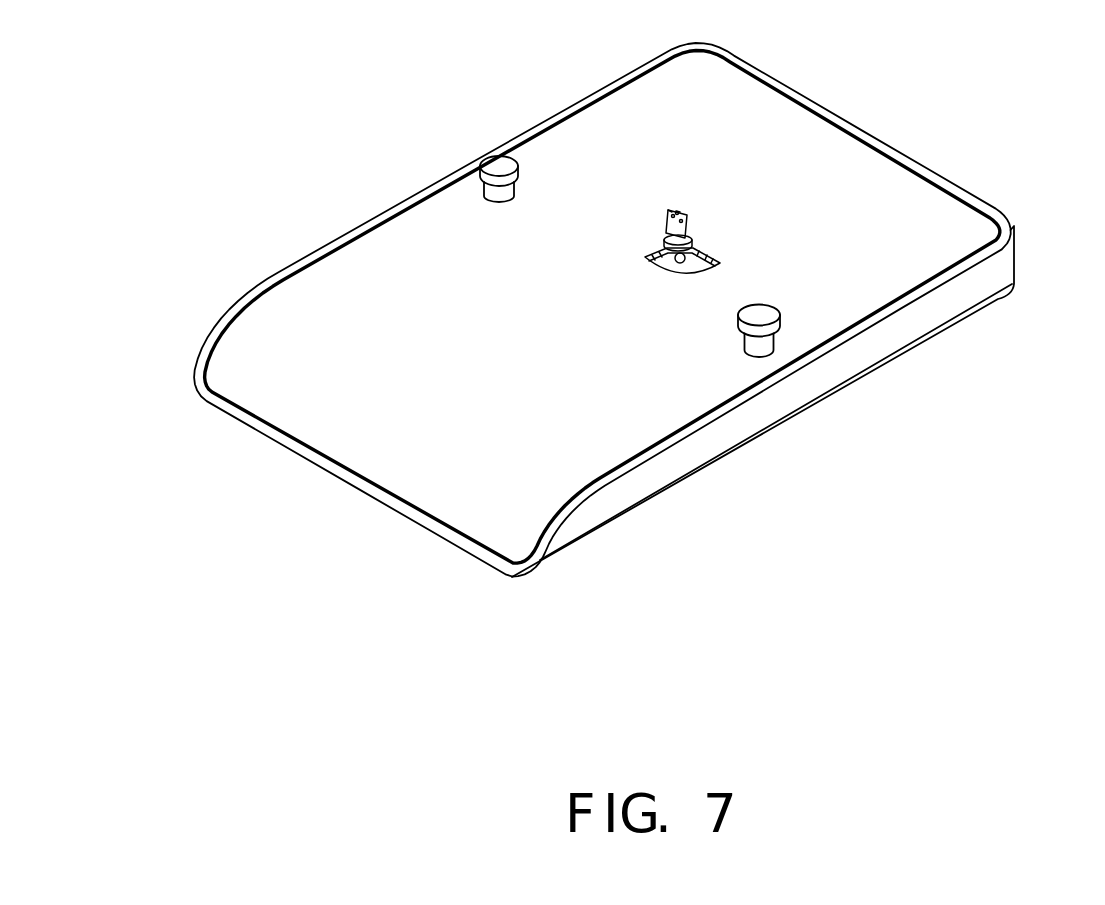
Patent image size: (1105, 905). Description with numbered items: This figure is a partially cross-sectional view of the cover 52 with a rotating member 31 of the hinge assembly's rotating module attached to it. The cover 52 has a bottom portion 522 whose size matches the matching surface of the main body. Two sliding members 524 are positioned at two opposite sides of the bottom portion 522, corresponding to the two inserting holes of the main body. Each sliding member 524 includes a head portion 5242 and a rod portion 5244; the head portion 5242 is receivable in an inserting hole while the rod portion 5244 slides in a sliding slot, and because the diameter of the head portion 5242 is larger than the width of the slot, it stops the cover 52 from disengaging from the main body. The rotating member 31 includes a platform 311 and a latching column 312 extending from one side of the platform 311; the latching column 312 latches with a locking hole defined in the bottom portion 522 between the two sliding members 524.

The cover 52 is at (638, 310).
The bottom portion 522 is at (598, 173).
The sliding member 524 is at (726, 341).
The head portion 5242 is at (763, 315).
The rod portion 5244 is at (803, 412).
The rotating member 31 is at (836, 173).
The platform 311 is at (692, 236).
The latching column 312 is at (707, 262).